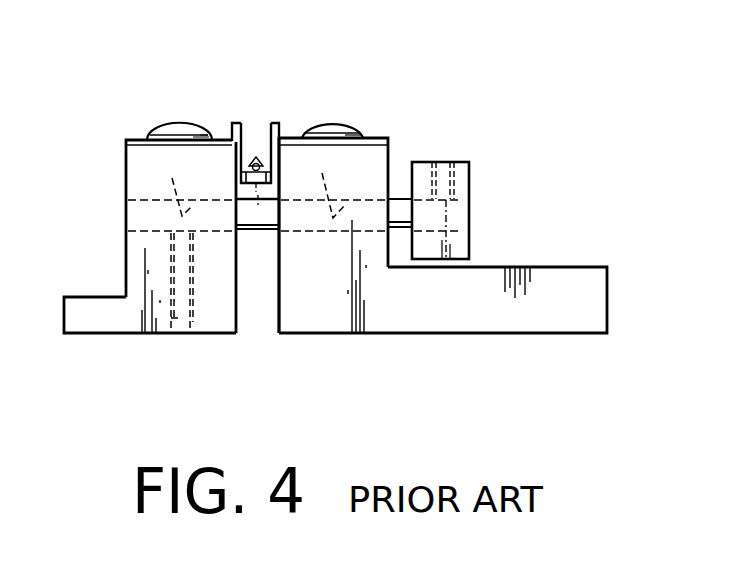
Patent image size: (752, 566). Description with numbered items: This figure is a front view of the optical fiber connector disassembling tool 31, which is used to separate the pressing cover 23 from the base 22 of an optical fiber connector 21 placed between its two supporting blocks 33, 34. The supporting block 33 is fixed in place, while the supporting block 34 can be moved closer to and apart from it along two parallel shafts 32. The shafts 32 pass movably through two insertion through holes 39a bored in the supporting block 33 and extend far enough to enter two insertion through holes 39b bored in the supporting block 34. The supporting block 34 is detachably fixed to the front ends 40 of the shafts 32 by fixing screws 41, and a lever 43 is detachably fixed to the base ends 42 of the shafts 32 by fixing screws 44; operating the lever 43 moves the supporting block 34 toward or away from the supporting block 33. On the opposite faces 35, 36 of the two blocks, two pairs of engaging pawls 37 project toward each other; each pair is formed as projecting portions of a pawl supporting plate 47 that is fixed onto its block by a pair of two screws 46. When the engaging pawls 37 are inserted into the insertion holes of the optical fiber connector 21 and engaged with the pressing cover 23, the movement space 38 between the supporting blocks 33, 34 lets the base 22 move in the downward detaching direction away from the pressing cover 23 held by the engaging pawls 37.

The optical fiber connector 21 is at (256, 124).
The base 22 is at (258, 196).
The pressing cover 23 is at (272, 128).
The optical fiber connector disassembling tool 31 is at (389, 146).
The shafts 32 is at (272, 224).
The supporting block 33 is at (422, 330).
The supporting block 34 is at (126, 320).
The opposite face 35 is at (272, 322).
The opposite face 36 is at (236, 322).
The engaging pawls 37 is at (240, 124).
The movement space 38 is at (258, 320).
The insertion through holes 39a is at (333, 239).
The insertion through holes 39b is at (177, 183).
The front ends 40 is at (132, 222).
The fixing screws 41 is at (178, 322).
The base ends 42 is at (470, 216).
The lever 43 is at (470, 171).
The fixing screws 44 is at (447, 163).
The screws 46 is at (340, 136).
The pawl supporting plate 47 is at (380, 136).